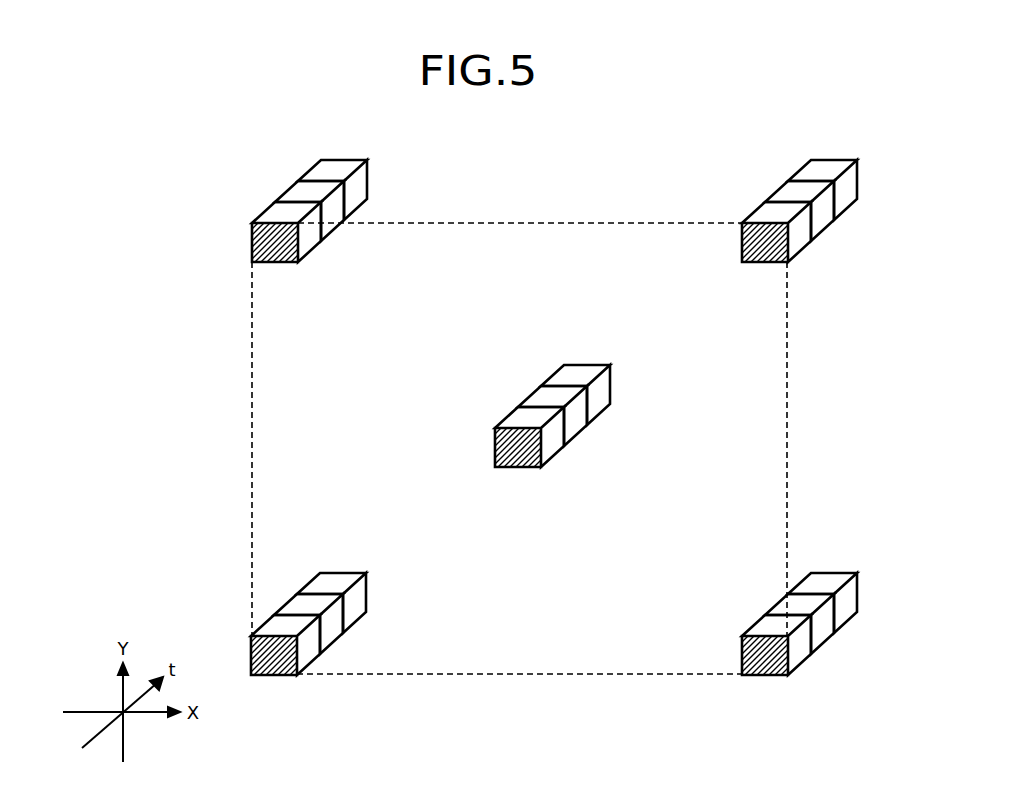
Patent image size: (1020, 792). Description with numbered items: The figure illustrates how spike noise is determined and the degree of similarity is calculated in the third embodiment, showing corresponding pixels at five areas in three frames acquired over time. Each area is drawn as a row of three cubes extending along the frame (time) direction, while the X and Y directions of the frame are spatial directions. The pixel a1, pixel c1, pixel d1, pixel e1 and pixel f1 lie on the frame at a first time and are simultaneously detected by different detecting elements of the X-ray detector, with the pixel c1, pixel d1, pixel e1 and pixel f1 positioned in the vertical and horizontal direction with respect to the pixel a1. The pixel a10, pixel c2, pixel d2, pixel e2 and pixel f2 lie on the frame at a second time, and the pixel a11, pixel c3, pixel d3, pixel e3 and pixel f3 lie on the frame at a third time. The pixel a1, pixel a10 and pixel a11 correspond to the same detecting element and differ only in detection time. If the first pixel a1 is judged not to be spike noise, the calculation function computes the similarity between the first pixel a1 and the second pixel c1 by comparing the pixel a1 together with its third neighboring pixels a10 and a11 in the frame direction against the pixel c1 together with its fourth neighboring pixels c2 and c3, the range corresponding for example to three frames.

The pixel c1 is at (277, 215).
The pixel c2 is at (300, 192).
The pixel c3 is at (323, 170).
The pixel d1 is at (767, 215).
The pixel d2 is at (790, 192).
The pixel d3 is at (813, 170).
The pixel a1 is at (520, 418).
The pixel a10 is at (542, 395).
The pixel a11 is at (565, 373).
The pixel e1 is at (277, 627).
The pixel e2 is at (293, 607).
The pixel e3 is at (337, 577).
The pixel f1 is at (765, 627).
The pixel f2 is at (783, 605).
The pixel f3 is at (830, 575).